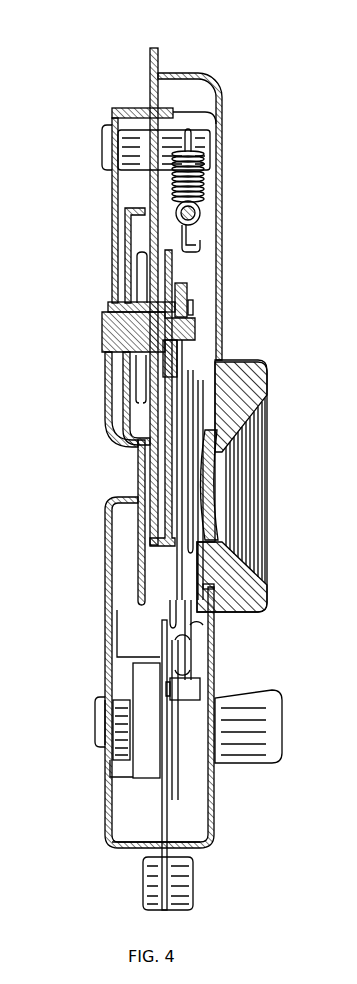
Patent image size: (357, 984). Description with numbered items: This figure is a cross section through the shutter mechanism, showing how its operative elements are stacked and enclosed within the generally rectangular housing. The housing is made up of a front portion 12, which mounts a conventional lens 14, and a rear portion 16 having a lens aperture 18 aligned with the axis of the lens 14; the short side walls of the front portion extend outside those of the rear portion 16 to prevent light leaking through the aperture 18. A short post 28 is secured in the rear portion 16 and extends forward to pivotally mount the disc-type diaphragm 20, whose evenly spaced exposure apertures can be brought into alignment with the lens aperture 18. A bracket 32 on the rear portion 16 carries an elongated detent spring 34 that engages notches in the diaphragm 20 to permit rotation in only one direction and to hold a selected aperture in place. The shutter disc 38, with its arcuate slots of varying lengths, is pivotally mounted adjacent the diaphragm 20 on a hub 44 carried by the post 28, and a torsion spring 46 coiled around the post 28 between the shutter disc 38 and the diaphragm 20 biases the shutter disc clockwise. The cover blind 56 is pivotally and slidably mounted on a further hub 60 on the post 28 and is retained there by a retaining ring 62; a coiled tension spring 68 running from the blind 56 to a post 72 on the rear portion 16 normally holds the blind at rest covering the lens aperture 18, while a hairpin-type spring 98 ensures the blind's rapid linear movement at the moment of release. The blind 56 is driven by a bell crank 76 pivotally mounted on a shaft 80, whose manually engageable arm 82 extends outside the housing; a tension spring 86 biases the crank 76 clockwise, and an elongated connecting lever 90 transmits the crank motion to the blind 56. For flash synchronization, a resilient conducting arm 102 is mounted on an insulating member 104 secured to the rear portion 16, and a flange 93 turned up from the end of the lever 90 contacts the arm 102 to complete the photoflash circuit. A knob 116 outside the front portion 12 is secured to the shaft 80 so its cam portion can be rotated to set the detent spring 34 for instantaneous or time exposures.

The front portion 12 is at (214, 818).
The lens 14 is at (215, 475).
The rear portion 16 is at (106, 812).
The lens aperture 18 is at (135, 477).
The diaphragm 20 is at (160, 50).
The post 28 is at (110, 332).
The bracket 32 is at (117, 655).
The detent spring 34 is at (133, 597).
The shutter disc 38 is at (148, 225).
The hub 44 is at (107, 313).
The torsion spring 46 is at (137, 402).
The cover blind 56 is at (186, 269).
The hub 60 is at (188, 294).
The retaining ring 62 is at (195, 312).
The tension spring 68 is at (205, 187).
The post 72 is at (112, 140).
The bell crank 76 is at (165, 812).
The shaft 80 is at (95, 725).
The manually engageable arm 82 is at (168, 852).
The tension spring 86 is at (172, 697).
The connecting lever 90 is at (186, 640).
The flange 93 is at (187, 458).
The hairpin-type spring 98 is at (200, 236).
The conducting arm 102 is at (183, 557).
The insulating member 104 is at (192, 660).
The knob 116 is at (272, 727).